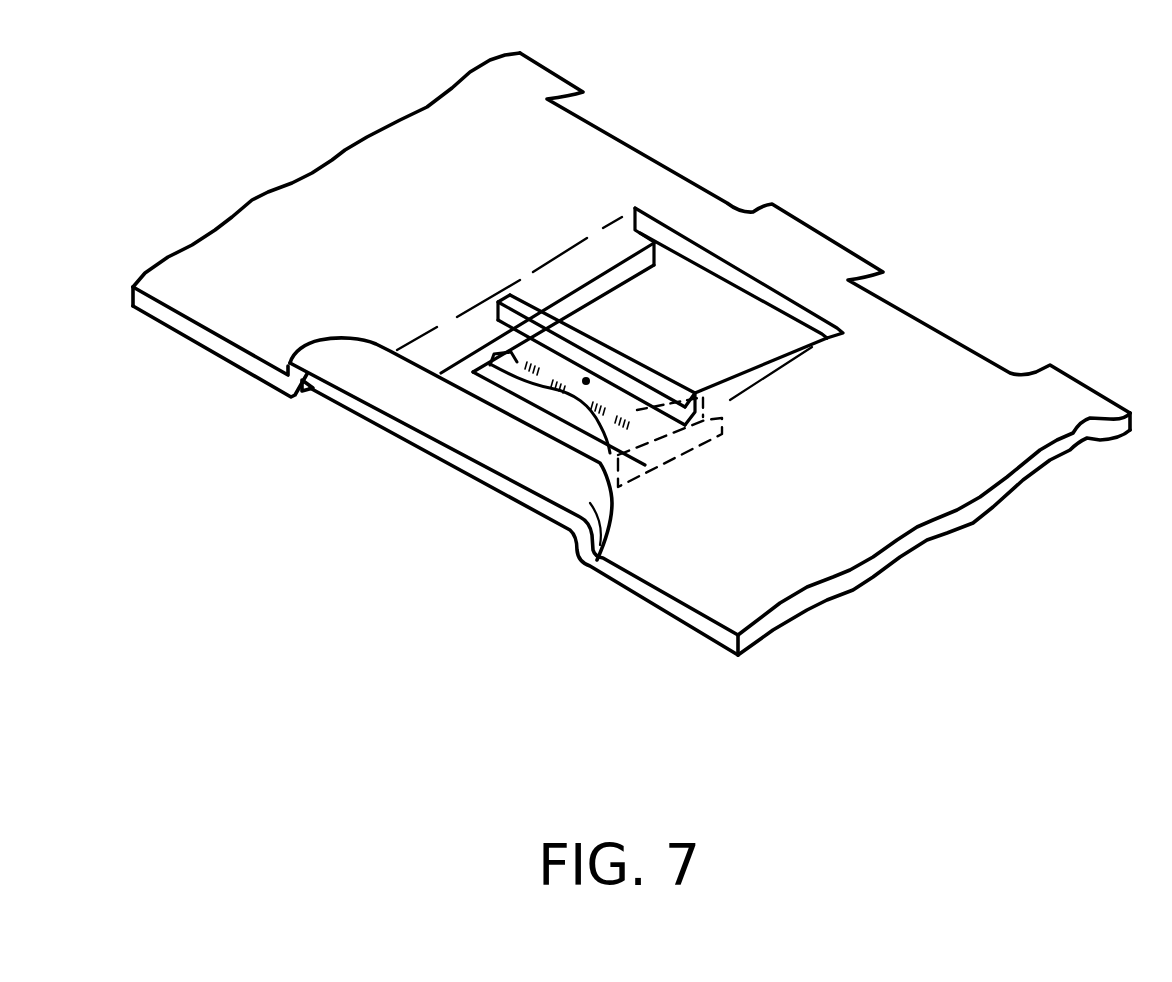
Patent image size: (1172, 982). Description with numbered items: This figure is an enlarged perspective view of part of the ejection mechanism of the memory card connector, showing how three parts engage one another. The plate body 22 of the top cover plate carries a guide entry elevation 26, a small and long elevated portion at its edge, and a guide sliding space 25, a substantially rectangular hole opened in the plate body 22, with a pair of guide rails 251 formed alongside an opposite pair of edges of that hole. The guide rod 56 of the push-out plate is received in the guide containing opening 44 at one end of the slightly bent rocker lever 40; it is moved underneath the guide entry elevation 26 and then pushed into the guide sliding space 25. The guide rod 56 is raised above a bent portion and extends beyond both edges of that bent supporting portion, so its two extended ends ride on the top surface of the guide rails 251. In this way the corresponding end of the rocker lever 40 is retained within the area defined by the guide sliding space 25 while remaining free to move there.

The plate body 22 is at (947, 500).
The guide sliding space 25 is at (707, 327).
The guide rails 251 is at (615, 258).
The guide entry elevation 26 is at (387, 395).
The rocker lever 40 is at (560, 407).
The guide containing opening 44 is at (592, 388).
The guide rod 56 is at (582, 378).